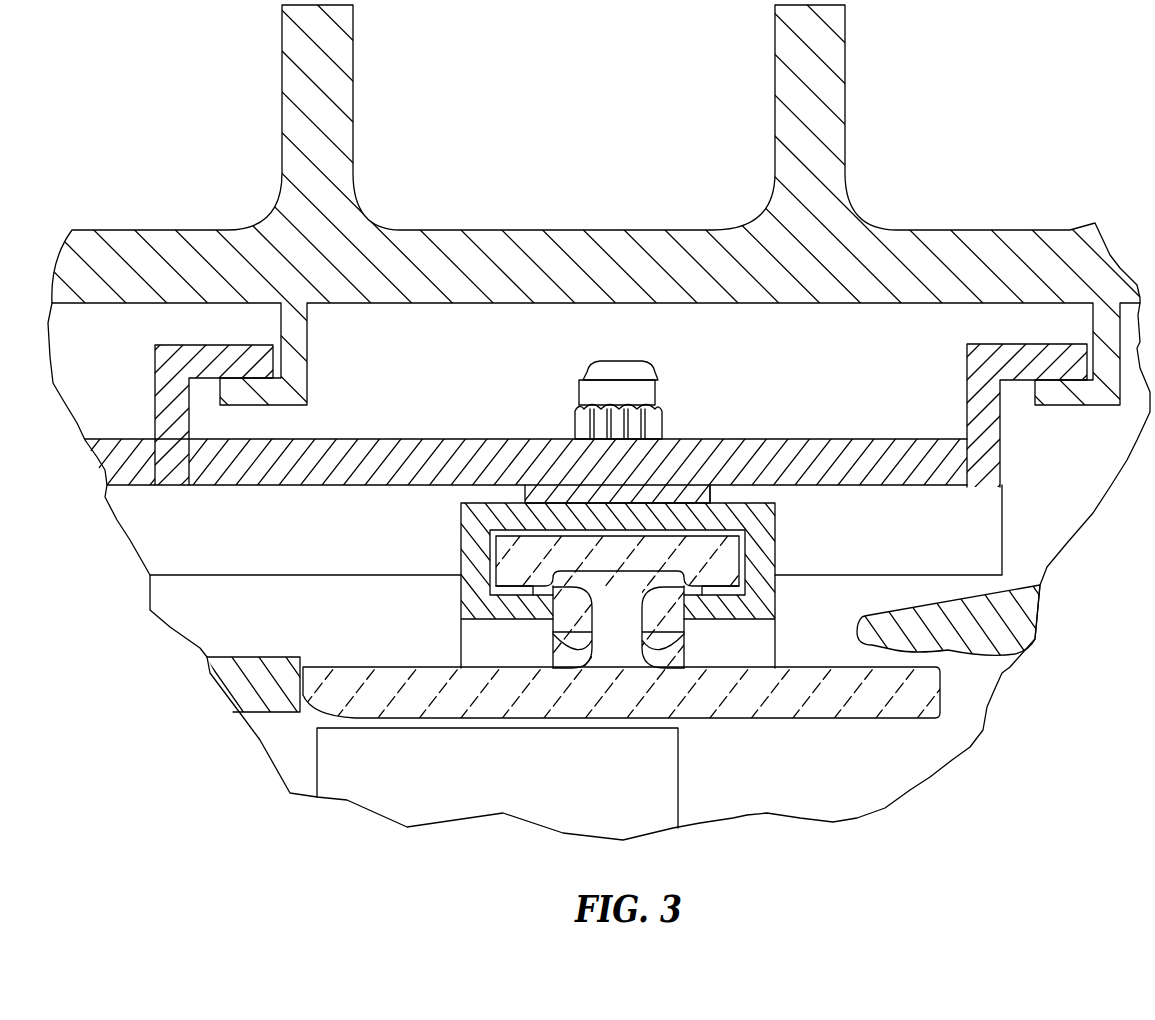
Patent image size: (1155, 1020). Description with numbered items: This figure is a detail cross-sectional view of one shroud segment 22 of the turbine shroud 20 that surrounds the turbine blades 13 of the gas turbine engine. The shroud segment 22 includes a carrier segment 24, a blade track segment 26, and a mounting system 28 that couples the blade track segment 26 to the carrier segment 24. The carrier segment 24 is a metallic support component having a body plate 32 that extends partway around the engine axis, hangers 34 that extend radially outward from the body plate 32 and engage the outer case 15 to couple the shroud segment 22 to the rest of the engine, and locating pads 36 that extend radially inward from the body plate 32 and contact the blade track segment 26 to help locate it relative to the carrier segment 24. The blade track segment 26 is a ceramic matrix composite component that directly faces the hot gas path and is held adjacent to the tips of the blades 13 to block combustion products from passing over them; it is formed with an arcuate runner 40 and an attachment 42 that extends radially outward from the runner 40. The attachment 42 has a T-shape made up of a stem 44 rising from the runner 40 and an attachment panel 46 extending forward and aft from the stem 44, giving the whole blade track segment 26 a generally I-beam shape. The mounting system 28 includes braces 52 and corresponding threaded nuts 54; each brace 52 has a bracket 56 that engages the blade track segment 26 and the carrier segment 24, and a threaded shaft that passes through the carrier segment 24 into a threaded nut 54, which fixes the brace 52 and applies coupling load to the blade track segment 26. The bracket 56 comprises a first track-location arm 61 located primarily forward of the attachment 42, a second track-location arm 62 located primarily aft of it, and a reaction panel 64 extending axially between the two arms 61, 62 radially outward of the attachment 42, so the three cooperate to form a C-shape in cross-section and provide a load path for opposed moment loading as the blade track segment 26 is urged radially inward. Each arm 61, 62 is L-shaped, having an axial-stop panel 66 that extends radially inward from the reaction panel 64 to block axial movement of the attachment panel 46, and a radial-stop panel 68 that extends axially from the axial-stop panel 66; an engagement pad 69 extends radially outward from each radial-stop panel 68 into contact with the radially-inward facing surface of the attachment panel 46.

The blades 13 is at (632, 778).
The outer case 15 is at (170, 226).
The turbine shroud 20 is at (915, 745).
The shroud segment 22 is at (858, 780).
The carrier segment 24 is at (822, 437).
The blade track segment 26 is at (763, 724).
The mounting system 28 is at (522, 408).
The body plate 32 is at (780, 437).
The hangers 34 is at (151, 390).
The locating pads 36 is at (714, 490).
The runner 40 is at (396, 660).
The attachment 42 is at (538, 628).
The stem 44 is at (582, 631).
The attachment panel 46 is at (520, 549).
The braces 52 is at (446, 488).
The threaded nuts 54 is at (572, 385).
The bracket 56 is at (420, 492).
The first track-location arm 61 is at (365, 570).
The second track-location arm 62 is at (842, 604).
The reaction panel 64 is at (509, 512).
The axial-stop panel 66 is at (478, 565).
The radial-stop panel 68 is at (518, 607).
The engagement pad 69 is at (598, 566).